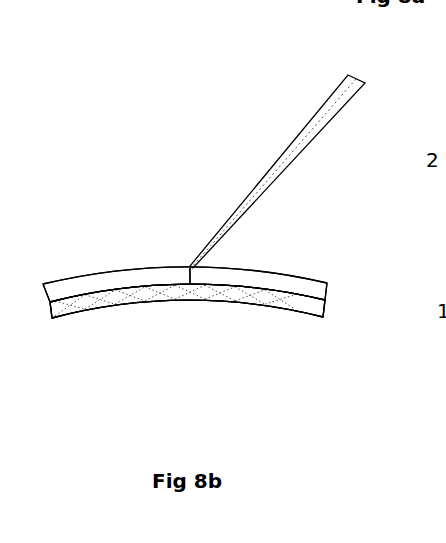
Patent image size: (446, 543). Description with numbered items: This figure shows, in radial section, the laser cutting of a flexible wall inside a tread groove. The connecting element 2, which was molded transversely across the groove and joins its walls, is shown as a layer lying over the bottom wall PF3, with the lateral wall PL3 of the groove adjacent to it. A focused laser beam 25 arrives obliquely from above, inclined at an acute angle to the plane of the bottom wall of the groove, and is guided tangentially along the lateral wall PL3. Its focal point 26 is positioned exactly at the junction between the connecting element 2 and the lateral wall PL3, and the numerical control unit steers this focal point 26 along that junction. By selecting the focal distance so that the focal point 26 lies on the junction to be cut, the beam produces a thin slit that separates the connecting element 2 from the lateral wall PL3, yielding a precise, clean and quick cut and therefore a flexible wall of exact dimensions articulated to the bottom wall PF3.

The connecting element 2 is at (193, 274).
The focused laser beam 25 is at (288, 160).
The focal point 26 is at (190, 267).
The lateral wall PL3 is at (302, 287).
The bottom wall PF3 is at (257, 287).